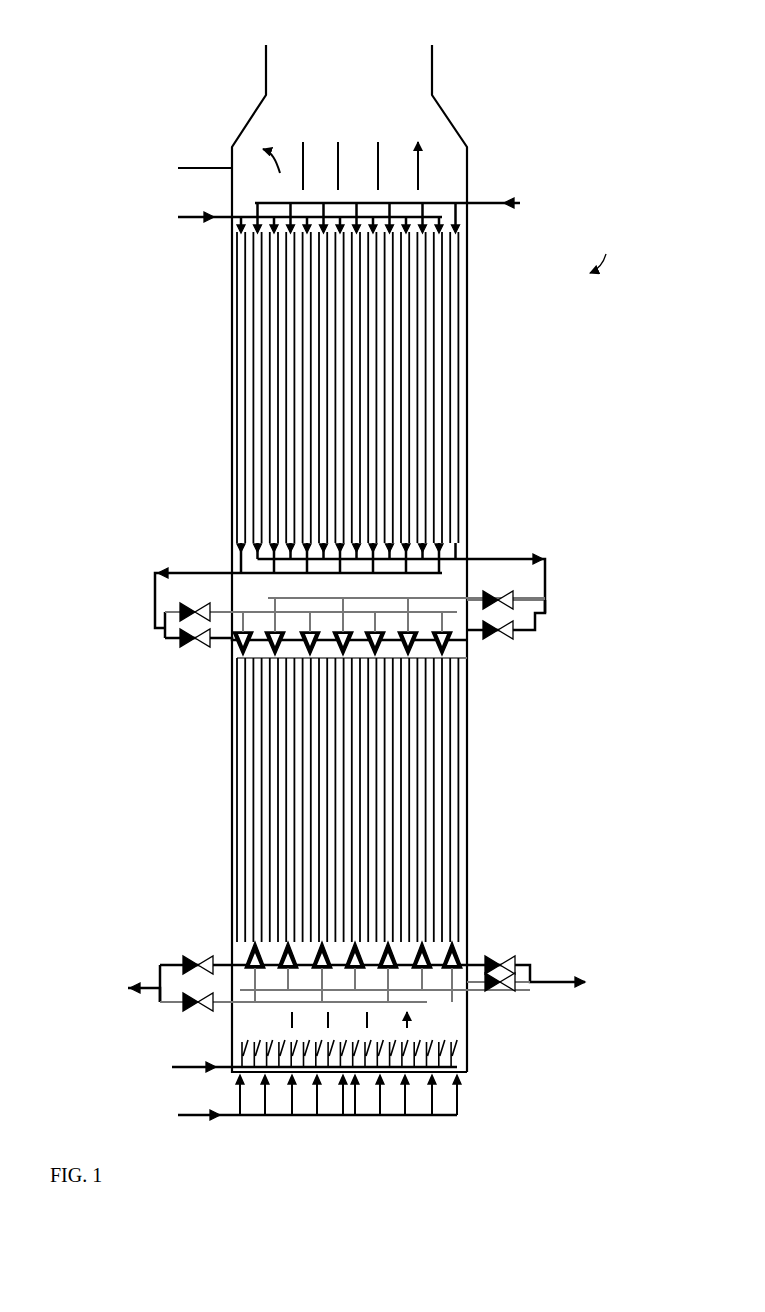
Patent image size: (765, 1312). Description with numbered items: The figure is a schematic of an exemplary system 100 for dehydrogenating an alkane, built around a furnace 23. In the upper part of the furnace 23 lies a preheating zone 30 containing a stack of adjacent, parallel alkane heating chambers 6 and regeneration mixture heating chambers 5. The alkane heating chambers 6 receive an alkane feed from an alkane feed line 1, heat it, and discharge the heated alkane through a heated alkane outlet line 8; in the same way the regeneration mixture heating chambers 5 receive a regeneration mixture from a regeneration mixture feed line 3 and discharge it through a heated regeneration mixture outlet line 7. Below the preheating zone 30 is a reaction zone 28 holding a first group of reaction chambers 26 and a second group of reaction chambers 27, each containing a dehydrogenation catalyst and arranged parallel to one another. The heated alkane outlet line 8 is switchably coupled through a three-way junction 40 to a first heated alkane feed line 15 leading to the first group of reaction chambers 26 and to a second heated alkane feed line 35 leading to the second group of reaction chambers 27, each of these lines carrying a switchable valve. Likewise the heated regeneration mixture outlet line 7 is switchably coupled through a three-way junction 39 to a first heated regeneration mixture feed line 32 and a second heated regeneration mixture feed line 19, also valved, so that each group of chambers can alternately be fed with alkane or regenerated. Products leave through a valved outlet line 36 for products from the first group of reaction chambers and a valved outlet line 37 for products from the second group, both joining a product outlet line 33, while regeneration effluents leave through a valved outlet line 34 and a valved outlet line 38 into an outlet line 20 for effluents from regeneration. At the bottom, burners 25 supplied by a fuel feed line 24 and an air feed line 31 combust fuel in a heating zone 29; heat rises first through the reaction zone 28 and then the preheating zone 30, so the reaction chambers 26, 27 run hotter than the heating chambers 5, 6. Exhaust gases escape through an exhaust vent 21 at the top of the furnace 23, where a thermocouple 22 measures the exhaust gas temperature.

The alkane feed line 1 is at (297, 219).
The regeneration mixture feed line 3 is at (399, 213).
The regeneration mixture heating chambers 5 is at (468, 341).
The alkane heating chambers 6 is at (232, 336).
The heated regeneration mixture outlet line 7 is at (485, 559).
The heated alkane outlet line 8 is at (195, 571).
The first heated alkane feed line 15 is at (355, 639).
The second heated regeneration mixture feed line 19 is at (506, 591).
The outlet line for effluents from regeneration 20 is at (592, 976).
The exhaust vent 21 is at (349, 137).
The thermocouple 22 is at (210, 168).
The furnace 23 is at (468, 174).
The fuel feed line 24 is at (173, 1067).
The burners 25 is at (465, 1050).
The first group of reaction chambers 26 is at (232, 756).
The second group of reaction chambers 27 is at (458, 769).
The reaction zone 28 is at (338, 800).
The heating zone 29 is at (375, 1016).
The preheating zone 30 is at (347, 387).
The air feed line 31 is at (179, 1115).
The first heated regeneration mixture feed line 32 is at (498, 644).
The product outlet line 33 is at (123, 983).
The outlet line for effluents from regeneration of the first group of reaction chamb 34 is at (513, 989).
The second heated alkane feed line 35 is at (198, 600).
The outlet line for products from the first group of reaction chambers 36 is at (196, 1015).
The outlet line for products from the second group of reaction chambers 37 is at (372, 966).
The outlet line for effluents from regeneration of the second group of reaction cham 38 is at (500, 950).
The three-way junction 39 is at (548, 616).
The three-way junction 40 is at (161, 636).
The system 100 is at (610, 252).